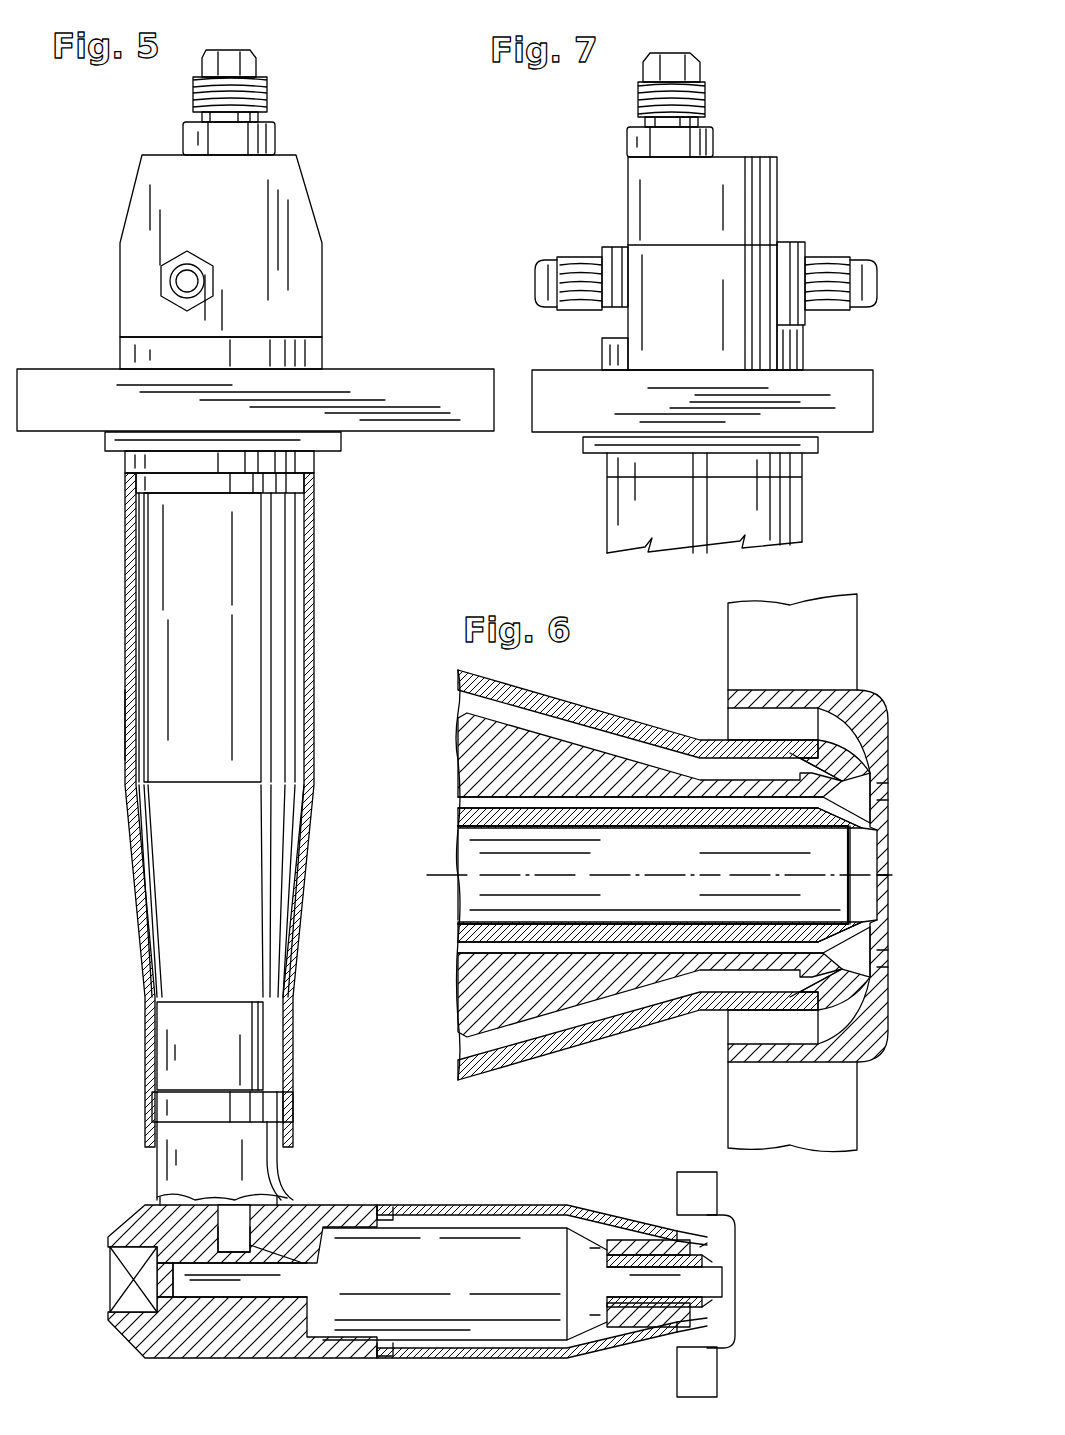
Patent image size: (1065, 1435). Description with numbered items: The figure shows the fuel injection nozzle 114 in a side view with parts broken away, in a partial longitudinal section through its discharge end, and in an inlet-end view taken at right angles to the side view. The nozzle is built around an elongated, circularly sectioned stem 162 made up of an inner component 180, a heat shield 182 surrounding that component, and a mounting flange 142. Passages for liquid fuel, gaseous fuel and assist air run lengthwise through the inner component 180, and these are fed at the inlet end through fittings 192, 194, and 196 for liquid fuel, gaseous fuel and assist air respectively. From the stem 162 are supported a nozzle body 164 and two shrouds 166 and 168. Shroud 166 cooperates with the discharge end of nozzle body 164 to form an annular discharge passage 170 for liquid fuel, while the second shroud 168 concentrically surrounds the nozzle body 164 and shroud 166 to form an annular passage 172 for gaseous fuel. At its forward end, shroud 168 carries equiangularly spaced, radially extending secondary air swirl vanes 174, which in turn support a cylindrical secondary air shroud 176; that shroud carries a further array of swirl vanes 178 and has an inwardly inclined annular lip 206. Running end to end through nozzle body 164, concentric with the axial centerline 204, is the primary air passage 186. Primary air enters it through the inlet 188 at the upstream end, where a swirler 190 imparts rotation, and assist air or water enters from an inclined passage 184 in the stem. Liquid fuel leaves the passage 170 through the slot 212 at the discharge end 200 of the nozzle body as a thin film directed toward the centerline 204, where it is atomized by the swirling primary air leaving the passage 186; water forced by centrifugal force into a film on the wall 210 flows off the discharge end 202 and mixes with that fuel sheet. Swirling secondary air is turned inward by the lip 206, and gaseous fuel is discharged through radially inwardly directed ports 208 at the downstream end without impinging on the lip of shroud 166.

In FIG. 5, the fuel injection nozzle 114 is at (106, 202).
In FIG. 5, the mounting flange 142 is at (82, 405).
In FIG. 7, the mounting flange 142 is at (601, 405).
In FIG. 5, the stem 162 is at (120, 566).
In FIG. 7, the stem 162 is at (803, 502).
In FIG. 5, the nozzle body 164 is at (431, 1182).
In FIG. 6, the nozzle body 164 is at (452, 663).
In FIG. 5, the shroud 166 is at (504, 1291).
In FIG. 6, the shroud 166 is at (470, 712).
In FIG. 6, the second shroud 168 is at (615, 713).
In FIG. 6, the annular discharge passage 170 is at (470, 800).
In FIG. 6, the annular passage 172 is at (480, 1042).
In FIG. 6, the secondary air swirl vanes 174 is at (782, 727).
In FIG. 6, the secondary air shroud 176 is at (782, 686).
In FIG. 6, the swirl vanes 178 is at (833, 627).
In FIG. 5, the inner component 180 is at (220, 641).
In FIG. 5, the heat shield 182 is at (127, 689).
In FIG. 5, the inclined passage 184 is at (318, 1266).
In FIG. 5, the primary air passage 186 is at (707, 1285).
In FIG. 6, the primary air passage 186 is at (660, 863).
In FIG. 5, the inlet 188 is at (108, 1254).
In FIG. 5, the swirler 190 is at (112, 1285).
In FIG. 5, the fitting 192 is at (206, 262).
In FIG. 7, the fitting 192 is at (538, 260).
In FIG. 7, the fitting 194 is at (867, 258).
In FIG. 5, the fitting 196 is at (258, 72).
In FIG. 7, the fitting 196 is at (702, 79).
In FIG. 6, the discharge end 200 is at (850, 777).
In FIG. 6, the discharge end 202 is at (868, 832).
In FIG. 6, the axial centerline 204 is at (456, 875).
In FIG. 6, the annular lip 206 is at (838, 978).
In FIG. 6, the ports 208 is at (867, 997).
In FIG. 5, the wall 210 is at (307, 1290).
In FIG. 6, the wall 210 is at (693, 923).
In FIG. 6, the slot 212 is at (840, 925).